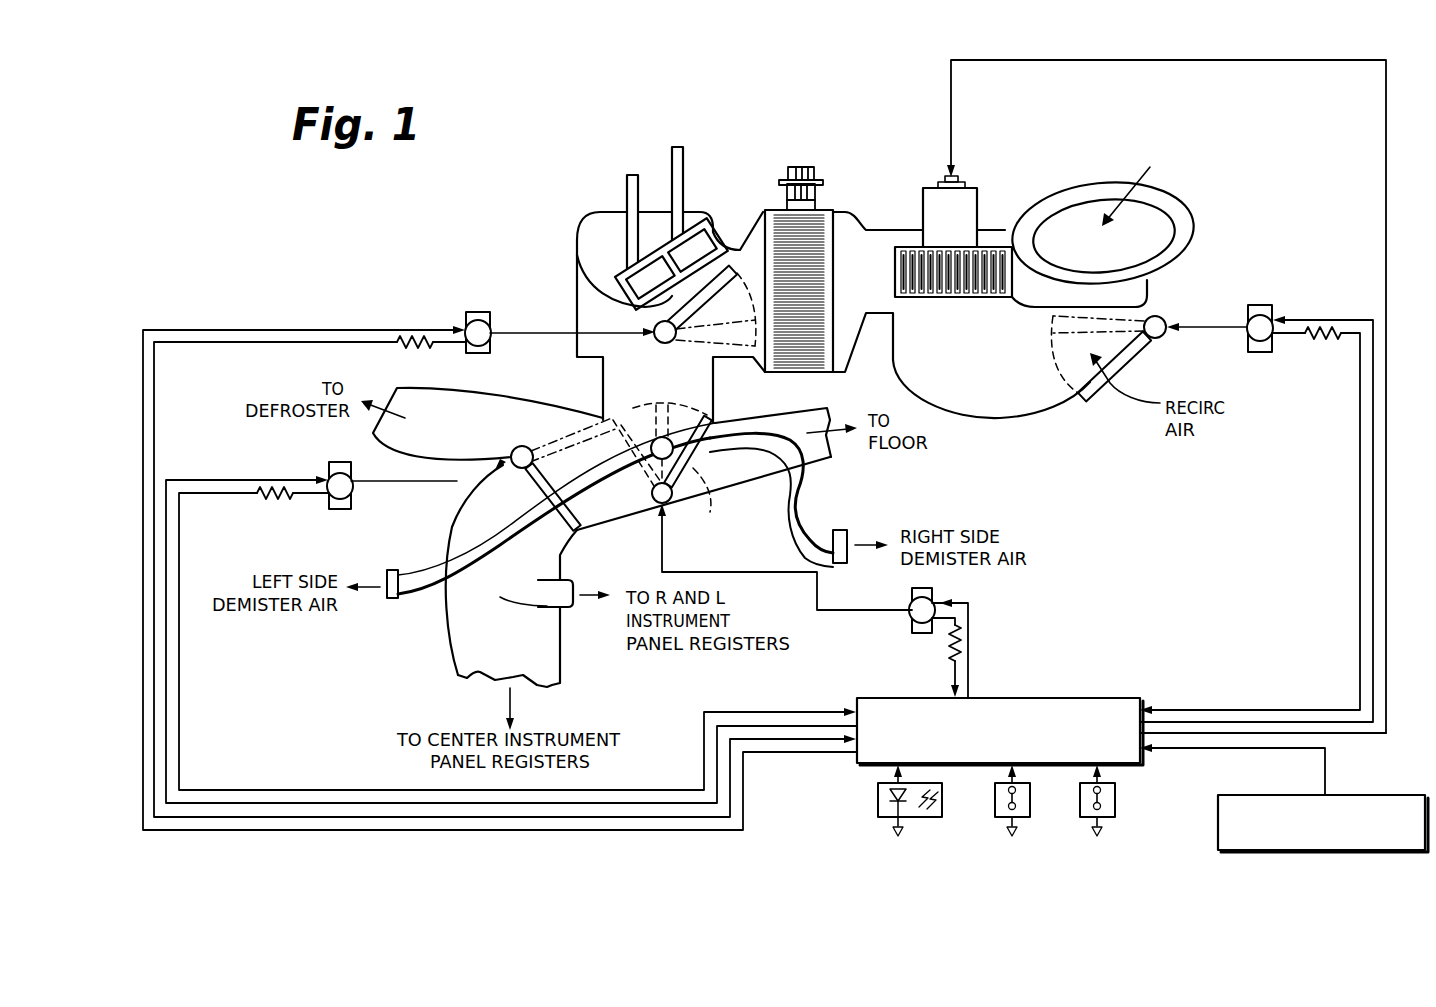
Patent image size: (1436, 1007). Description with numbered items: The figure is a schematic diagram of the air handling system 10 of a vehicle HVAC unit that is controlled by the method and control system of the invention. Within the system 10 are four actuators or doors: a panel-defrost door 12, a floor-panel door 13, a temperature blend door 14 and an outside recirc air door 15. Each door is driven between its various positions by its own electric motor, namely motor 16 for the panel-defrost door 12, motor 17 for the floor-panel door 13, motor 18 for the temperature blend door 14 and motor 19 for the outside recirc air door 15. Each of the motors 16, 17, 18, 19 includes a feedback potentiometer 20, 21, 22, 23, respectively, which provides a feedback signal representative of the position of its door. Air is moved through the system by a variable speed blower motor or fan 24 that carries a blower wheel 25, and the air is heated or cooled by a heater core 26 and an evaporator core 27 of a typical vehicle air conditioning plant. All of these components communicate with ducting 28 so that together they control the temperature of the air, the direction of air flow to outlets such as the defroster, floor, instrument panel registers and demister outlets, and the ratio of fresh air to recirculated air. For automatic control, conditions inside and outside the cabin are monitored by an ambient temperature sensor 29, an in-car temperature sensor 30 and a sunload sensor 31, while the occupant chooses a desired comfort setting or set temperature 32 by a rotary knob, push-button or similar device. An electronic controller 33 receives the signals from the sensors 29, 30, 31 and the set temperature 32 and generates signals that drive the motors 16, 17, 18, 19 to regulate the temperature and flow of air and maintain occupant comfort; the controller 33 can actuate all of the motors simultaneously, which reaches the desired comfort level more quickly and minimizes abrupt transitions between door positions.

The air handling system 10 is at (1063, 147).
The panel-defrost door 12 is at (521, 470).
The floor-panel door 13 is at (695, 465).
The temperature blend door 14 is at (655, 330).
The outside recirc air door 15 is at (1143, 352).
The electric motor 16 is at (329, 470).
The electric motor 17 is at (912, 600).
The electric motor 18 is at (466, 315).
The electric motor 19 is at (1272, 310).
The feedback potentiometer 20 is at (270, 500).
The feedback potentiometer 21 is at (953, 650).
The feedback potentiometer 22 is at (408, 343).
The feedback potentiometer 23 is at (1327, 343).
The variable speed blower motor 24 is at (925, 222).
The blower wheel 25 is at (1000, 243).
The heater core 26 is at (640, 305).
The evaporator core 27 is at (838, 212).
The ducting 28 is at (820, 462).
The ambient temperature sensor 29 is at (1115, 800).
The in-car temperature sensor 30 is at (995, 800).
The sunload sensor 31 is at (878, 800).
The set temperature 32 is at (1368, 795).
The electronic controller 33 is at (1078, 697).